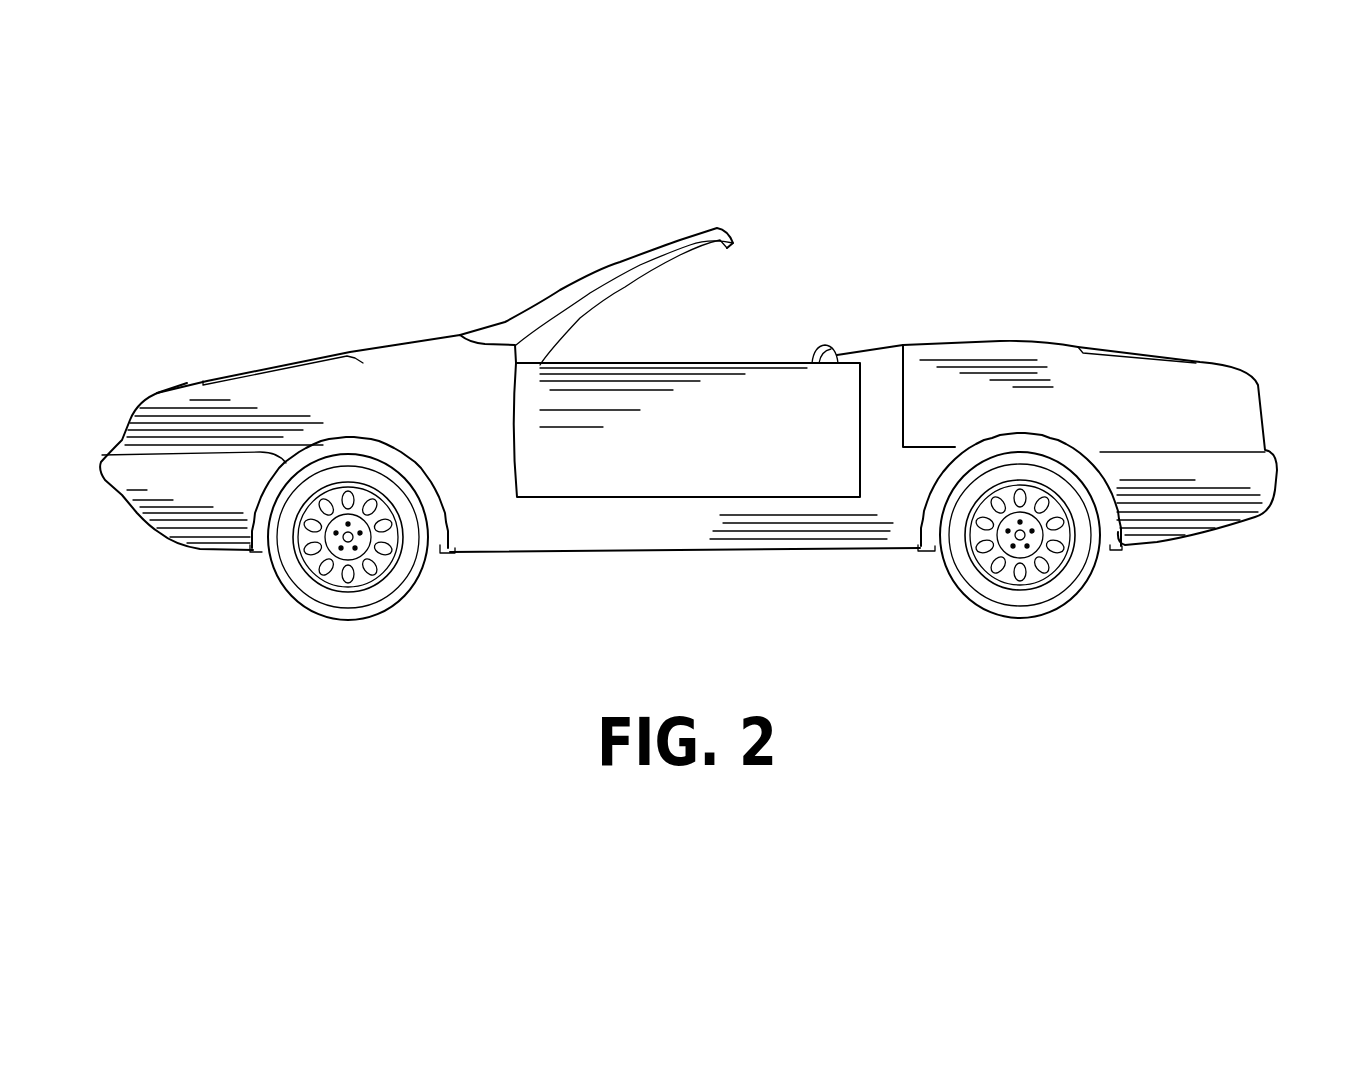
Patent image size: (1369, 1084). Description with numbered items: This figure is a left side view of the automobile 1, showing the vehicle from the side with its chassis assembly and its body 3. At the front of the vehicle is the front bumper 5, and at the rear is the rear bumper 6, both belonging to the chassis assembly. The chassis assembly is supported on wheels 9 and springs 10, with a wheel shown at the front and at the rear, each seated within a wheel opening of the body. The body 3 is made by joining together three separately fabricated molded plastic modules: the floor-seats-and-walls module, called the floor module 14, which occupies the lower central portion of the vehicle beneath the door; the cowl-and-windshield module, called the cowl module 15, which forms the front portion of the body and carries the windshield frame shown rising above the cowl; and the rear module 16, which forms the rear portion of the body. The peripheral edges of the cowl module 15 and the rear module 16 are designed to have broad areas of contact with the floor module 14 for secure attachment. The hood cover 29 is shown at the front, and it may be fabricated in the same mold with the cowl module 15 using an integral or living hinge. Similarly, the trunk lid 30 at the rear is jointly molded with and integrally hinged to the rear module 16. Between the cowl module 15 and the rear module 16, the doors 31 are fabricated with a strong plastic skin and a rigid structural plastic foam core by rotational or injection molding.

The automobile 1 is at (118, 549).
The body 3 is at (705, 574).
The front bumper 5 is at (100, 475).
The rear bumper 6 is at (1277, 483).
The wheels 9 is at (287, 590).
The springs 10 is at (430, 557).
The floor module 14 is at (682, 543).
The cowl module 15 is at (470, 406).
The rear module 16 is at (1148, 416).
The hood cover 29 is at (298, 362).
The trunk lid 30 is at (1122, 352).
The doors 31 is at (703, 444).